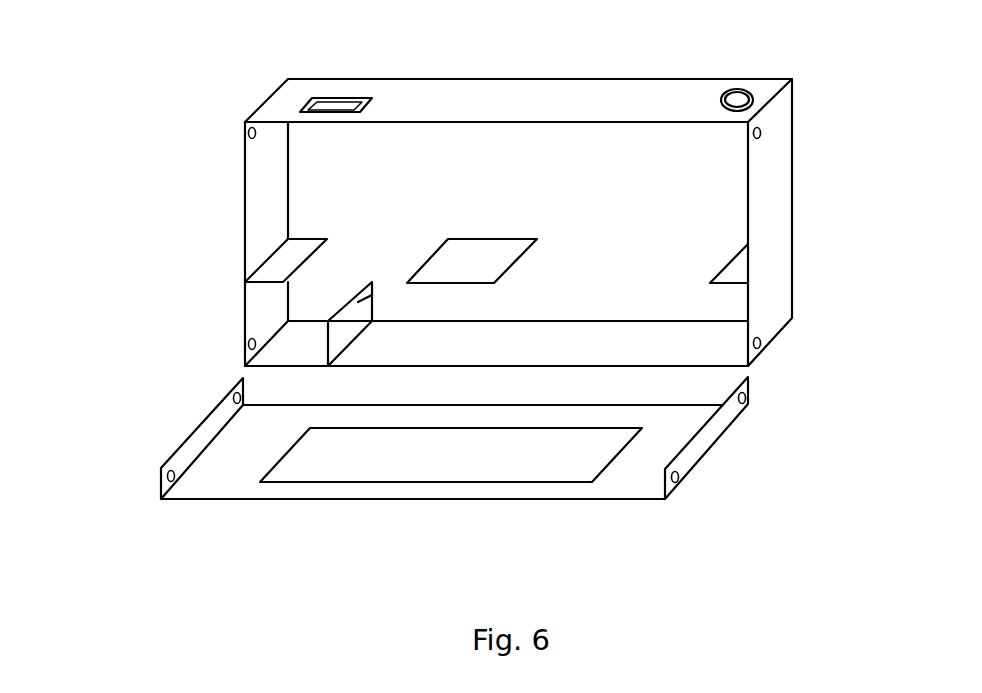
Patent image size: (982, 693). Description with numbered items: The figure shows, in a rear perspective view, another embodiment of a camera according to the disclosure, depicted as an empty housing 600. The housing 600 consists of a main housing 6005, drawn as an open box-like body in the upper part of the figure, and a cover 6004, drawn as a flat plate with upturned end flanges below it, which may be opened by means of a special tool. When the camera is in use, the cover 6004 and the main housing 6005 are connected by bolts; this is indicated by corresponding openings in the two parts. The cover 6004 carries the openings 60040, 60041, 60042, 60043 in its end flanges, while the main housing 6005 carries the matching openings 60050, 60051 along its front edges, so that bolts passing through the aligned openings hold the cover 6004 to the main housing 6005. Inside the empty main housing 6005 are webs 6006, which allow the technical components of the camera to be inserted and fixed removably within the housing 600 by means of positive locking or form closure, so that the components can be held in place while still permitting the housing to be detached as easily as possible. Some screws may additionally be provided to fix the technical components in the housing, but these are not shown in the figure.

The housing 600 is at (747, 456).
The cover 6004 is at (622, 490).
The main housing 6005 is at (778, 218).
The webs 6006 is at (358, 302).
The opening 60040 is at (177, 477).
The opening 60041 is at (235, 396).
The opening 60042 is at (680, 478).
The opening 60043 is at (746, 403).
The opening 60050 is at (249, 342).
The opening 60051 is at (249, 132).